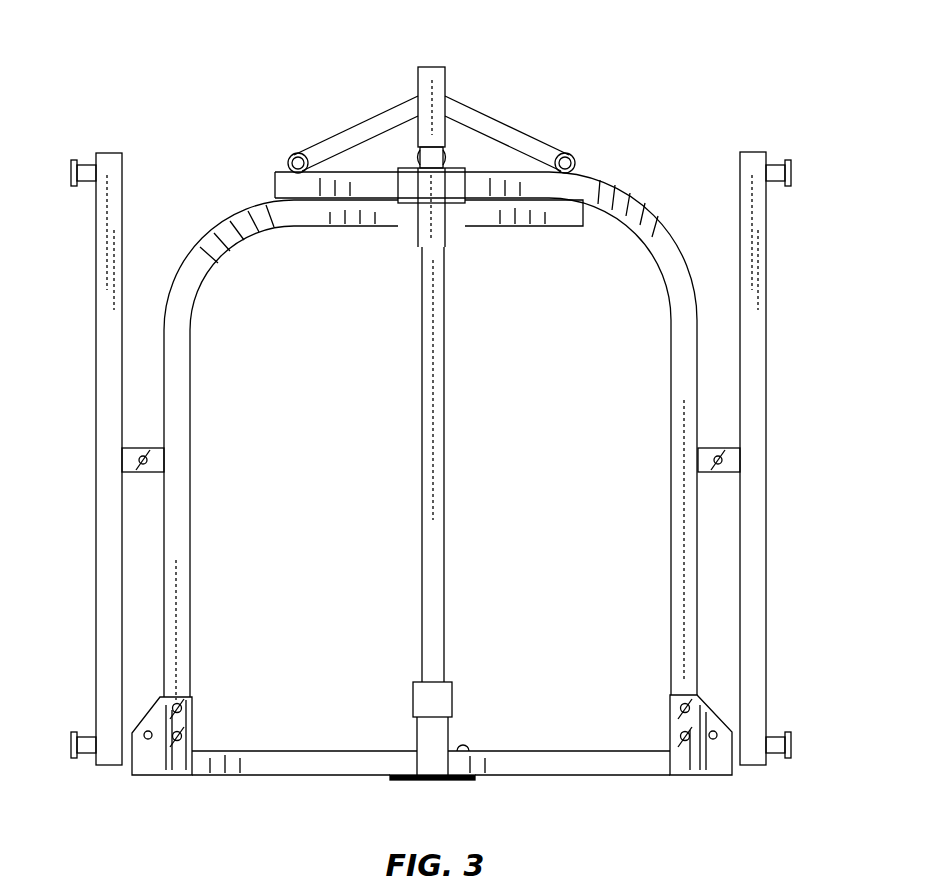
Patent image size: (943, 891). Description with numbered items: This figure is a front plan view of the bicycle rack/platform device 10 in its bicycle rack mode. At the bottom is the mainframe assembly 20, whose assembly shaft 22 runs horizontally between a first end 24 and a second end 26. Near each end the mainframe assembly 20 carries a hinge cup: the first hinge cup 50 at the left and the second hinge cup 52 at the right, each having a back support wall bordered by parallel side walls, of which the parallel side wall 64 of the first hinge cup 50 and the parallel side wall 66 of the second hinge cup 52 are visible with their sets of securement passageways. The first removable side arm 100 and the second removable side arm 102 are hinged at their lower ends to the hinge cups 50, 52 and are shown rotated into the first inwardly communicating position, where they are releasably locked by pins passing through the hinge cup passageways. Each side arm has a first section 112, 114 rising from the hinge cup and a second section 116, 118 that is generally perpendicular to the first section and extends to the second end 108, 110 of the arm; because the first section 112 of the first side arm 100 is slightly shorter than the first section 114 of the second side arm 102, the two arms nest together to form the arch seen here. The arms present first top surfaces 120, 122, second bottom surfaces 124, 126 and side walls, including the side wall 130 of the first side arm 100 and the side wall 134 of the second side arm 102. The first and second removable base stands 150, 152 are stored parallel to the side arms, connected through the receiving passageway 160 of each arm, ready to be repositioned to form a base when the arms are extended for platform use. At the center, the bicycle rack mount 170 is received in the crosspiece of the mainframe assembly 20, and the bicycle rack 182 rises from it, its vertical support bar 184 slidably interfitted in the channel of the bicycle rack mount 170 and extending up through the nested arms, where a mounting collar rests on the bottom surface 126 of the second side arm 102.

The bicycle rack/platform device 10 is at (588, 806).
The mainframe assembly 20 is at (426, 763).
The assembly shaft 22 is at (370, 751).
The first end 24 is at (193, 775).
The second end 26 is at (670, 778).
The first hinge cup 50 is at (167, 716).
The second hinge cup 52 is at (689, 718).
The parallel side wall 64 is at (183, 760).
The parallel side wall 66 is at (685, 765).
The first removable side arm 100 is at (265, 427).
The second removable side arm 102 is at (474, 402).
The second end 108 is at (592, 228).
The second end 110 is at (277, 180).
The first section 112 is at (190, 518).
The first section 114 is at (670, 548).
The second section 116 is at (322, 228).
The second section 118 is at (498, 160).
The first top surface 120 is at (468, 228).
The first top surface 122 is at (672, 296).
The second bottom surface 124 is at (200, 247).
The second bottom surface 126 is at (668, 232).
The parallel side wall 130 is at (177, 390).
The side wall 134 is at (668, 410).
The first removable base stand 150 is at (97, 382).
The second removable base stand 152 is at (767, 345).
The receiving passageway 160 is at (154, 472).
The bicycle rack mount 170 is at (430, 697).
The bicycle rack 182 is at (418, 78).
The vertical support bar 184 is at (422, 468).